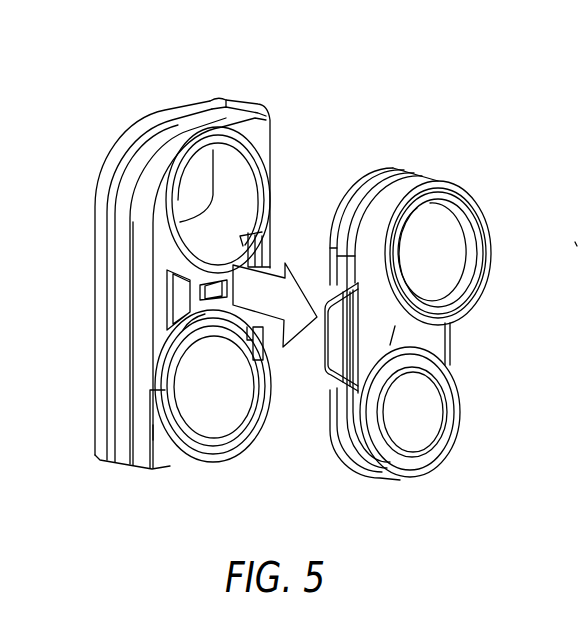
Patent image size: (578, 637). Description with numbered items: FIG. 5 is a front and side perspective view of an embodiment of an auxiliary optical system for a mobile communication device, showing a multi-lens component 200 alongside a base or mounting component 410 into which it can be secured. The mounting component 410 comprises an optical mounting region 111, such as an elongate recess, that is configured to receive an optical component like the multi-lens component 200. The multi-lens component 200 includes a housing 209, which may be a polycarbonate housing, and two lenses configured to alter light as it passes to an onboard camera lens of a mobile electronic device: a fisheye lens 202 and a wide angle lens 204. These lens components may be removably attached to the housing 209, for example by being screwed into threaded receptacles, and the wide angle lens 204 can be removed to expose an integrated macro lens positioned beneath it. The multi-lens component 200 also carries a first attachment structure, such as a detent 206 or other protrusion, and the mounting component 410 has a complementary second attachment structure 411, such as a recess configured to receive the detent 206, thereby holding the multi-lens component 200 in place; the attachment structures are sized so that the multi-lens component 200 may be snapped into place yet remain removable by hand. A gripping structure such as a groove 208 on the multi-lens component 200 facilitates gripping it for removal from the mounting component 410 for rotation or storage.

The mounting component 410 is at (117, 108).
The optical mounting region 111 is at (229, 209).
The second attachment structure 411 is at (158, 307).
The multi-lens component 200 is at (367, 162).
The fisheye lens 202 is at (452, 250).
The wide angle lens 204 is at (422, 415).
The detent 206 is at (452, 326).
The groove 208 is at (324, 412).
The housing 209 is at (437, 343).